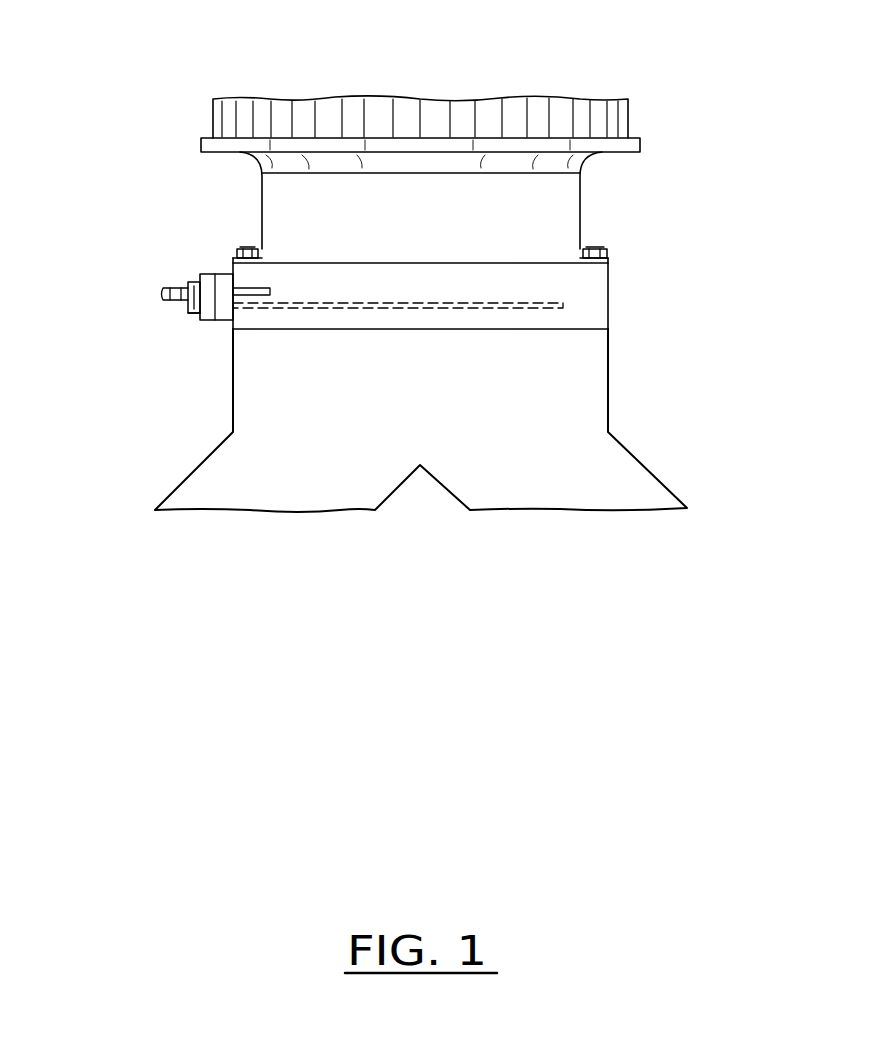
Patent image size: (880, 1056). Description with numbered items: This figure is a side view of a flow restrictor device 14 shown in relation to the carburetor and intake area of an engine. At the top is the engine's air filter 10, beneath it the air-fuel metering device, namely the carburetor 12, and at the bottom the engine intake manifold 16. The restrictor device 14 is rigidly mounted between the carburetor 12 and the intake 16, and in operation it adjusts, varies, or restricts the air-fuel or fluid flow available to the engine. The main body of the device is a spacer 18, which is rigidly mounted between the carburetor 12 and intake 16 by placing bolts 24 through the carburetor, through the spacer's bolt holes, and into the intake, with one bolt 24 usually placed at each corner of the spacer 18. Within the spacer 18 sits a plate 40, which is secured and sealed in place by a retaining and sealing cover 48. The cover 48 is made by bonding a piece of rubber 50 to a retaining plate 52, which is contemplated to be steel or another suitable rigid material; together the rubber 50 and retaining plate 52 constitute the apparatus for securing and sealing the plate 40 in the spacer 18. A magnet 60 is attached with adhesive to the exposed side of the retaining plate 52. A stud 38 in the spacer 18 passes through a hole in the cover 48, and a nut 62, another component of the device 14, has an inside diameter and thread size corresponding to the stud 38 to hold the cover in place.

The air filter 10 is at (628, 118).
The carburetor 12 is at (582, 213).
The restrictor device 14 is at (648, 317).
The engine intake manifold 16 is at (610, 432).
The spacer 18 is at (610, 288).
The bolts 24 is at (236, 250).
The stud 38 is at (262, 287).
The plate 40 is at (400, 312).
The retaining and sealing cover 48 is at (204, 340).
The rubber 50 is at (223, 273).
The retaining plate 52 is at (200, 278).
The magnet 60 is at (194, 316).
The nut 62 is at (190, 303).